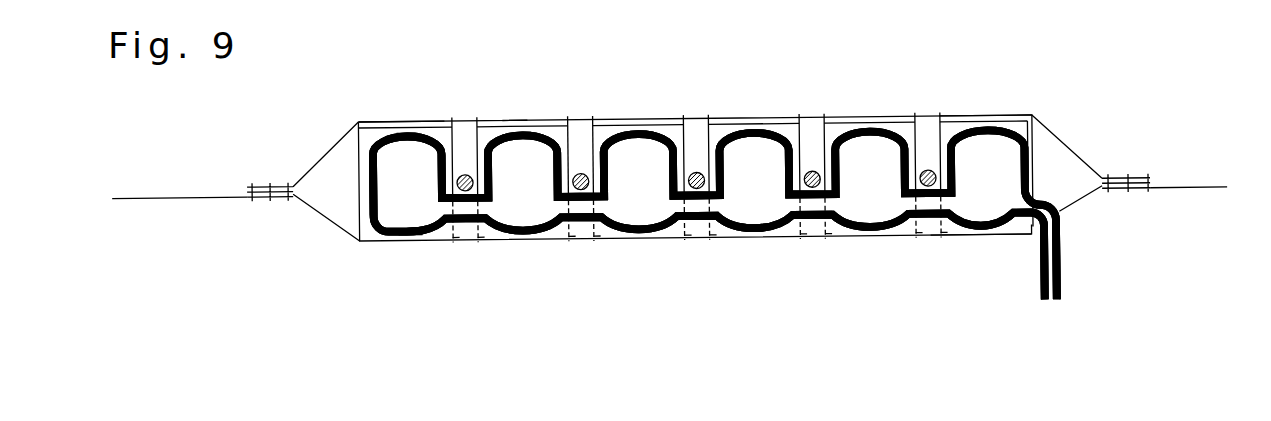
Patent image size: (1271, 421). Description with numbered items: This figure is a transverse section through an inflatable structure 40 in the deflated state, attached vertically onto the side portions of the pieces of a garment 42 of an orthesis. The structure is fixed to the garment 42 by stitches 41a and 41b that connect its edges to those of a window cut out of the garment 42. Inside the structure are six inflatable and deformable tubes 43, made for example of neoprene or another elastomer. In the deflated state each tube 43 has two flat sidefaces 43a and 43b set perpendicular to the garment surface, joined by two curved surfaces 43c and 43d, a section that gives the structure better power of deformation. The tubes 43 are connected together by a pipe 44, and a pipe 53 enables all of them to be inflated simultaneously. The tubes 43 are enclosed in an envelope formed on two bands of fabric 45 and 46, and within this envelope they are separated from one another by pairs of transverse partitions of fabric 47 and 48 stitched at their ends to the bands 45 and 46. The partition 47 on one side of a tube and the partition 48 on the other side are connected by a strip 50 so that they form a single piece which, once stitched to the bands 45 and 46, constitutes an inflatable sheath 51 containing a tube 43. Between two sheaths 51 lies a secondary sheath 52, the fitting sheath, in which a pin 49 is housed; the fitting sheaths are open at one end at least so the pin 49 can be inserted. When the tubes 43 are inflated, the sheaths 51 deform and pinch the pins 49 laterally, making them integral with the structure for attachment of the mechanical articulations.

The inflatable structure 40 is at (625, 245).
The stitches 41a is at (263, 181).
The stitches 41b is at (1138, 179).
The garment 42 is at (152, 193).
The inflatable and deformable tube 43 is at (375, 233).
The flat sideface 43a is at (372, 195).
The flat sideface 43b is at (440, 175).
The curved surface 43c is at (428, 235).
The curved surface 43d is at (396, 127).
The pipe 44 is at (805, 201).
The band of fabric 45 is at (993, 120).
The band of fabric 46 is at (973, 241).
The transverse partition of fabric 47 is at (569, 122).
The transverse partition of fabric 48 is at (592, 122).
The pin 49 is at (466, 172).
The strip 50 is at (515, 120).
The inflatable sheath 51 is at (440, 119).
The secondary sheath 52 is at (692, 135).
The pipe 53 is at (1059, 277).